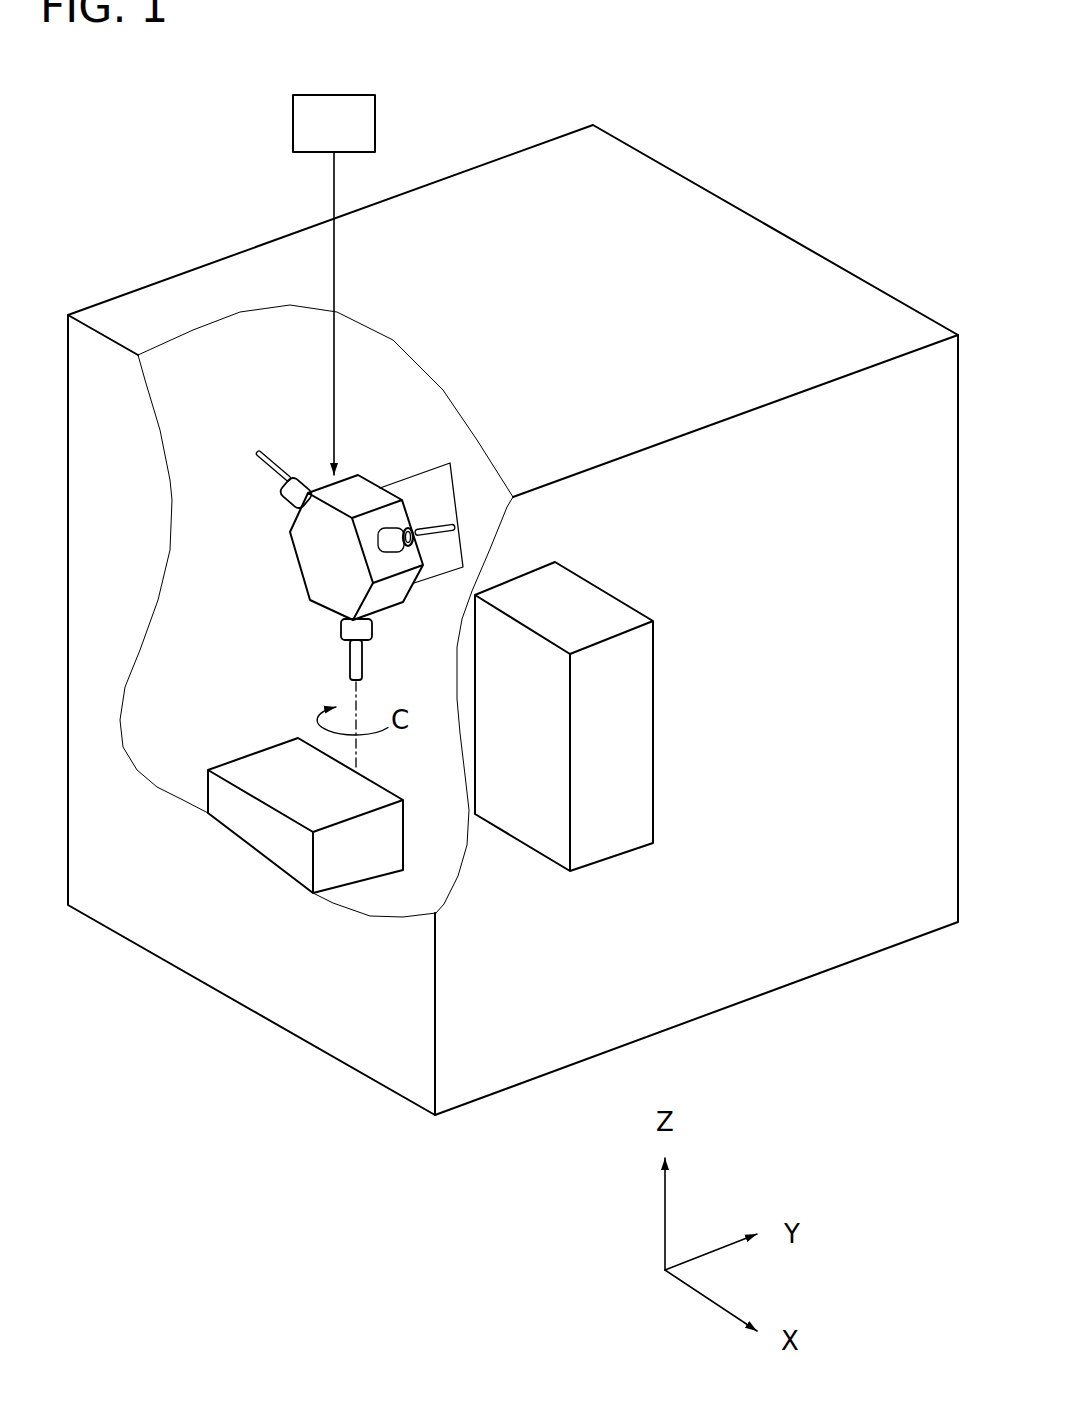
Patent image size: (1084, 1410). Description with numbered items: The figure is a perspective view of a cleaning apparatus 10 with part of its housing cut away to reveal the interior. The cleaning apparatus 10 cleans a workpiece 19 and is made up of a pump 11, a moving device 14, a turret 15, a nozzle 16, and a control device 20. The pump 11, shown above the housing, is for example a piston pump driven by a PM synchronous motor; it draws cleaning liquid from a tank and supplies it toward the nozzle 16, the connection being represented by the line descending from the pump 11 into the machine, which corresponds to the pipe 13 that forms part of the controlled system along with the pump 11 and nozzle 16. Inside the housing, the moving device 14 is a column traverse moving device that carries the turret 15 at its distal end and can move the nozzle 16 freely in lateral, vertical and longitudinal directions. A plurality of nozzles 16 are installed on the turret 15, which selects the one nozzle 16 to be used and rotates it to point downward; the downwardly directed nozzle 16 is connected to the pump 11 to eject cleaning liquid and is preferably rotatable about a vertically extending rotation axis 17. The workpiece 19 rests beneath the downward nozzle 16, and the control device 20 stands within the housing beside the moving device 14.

The cleaning apparatus 10 is at (928, 53).
The pump 11 is at (290, 119).
The pipe 13 is at (332, 200).
The moving device 14 is at (410, 470).
The turret 15 is at (290, 545).
The nozzle 16 is at (266, 453).
The rotation axis 17 is at (358, 703).
The workpiece 19 is at (258, 835).
The control device 20 is at (587, 868).